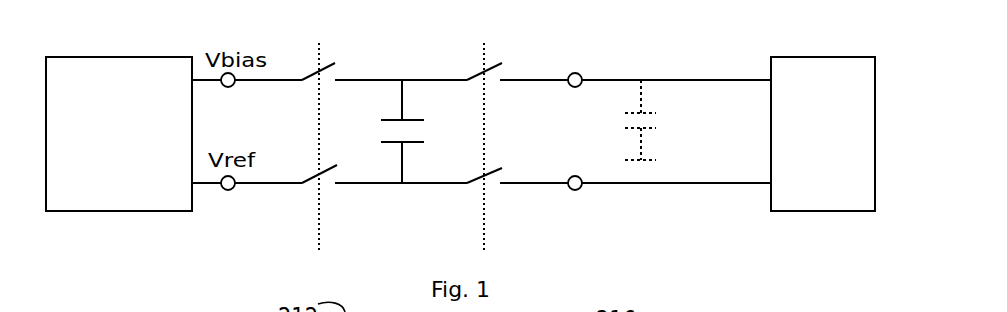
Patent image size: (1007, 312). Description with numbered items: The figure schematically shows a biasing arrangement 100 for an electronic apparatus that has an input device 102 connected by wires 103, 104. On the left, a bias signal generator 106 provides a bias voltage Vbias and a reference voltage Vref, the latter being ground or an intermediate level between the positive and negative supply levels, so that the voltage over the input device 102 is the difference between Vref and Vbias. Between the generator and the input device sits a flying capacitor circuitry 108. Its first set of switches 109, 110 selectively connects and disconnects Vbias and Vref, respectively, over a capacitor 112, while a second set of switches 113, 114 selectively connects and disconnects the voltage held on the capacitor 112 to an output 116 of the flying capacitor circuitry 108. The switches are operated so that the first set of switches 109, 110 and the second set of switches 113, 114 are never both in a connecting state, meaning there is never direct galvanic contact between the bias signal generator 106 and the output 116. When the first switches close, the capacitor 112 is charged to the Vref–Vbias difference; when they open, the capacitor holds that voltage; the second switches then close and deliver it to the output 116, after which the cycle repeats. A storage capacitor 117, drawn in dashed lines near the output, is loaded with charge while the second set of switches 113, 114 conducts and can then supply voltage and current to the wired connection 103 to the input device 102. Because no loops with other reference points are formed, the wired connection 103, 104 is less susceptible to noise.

The biasing arrangement 100 is at (553, 201).
The input device 102 is at (802, 190).
The wire 103 is at (627, 80).
The wire 104 is at (697, 185).
The bias signal generator 106 is at (120, 191).
The flying capacitor circuitry 108 is at (397, 201).
The first set switch 109 is at (324, 68).
The first set switch 110 is at (318, 185).
The capacitor 112 is at (400, 130).
The second set switch 113 is at (488, 70).
The second set switch 114 is at (486, 180).
The output 116 is at (578, 63).
The storage capacitor 117 is at (643, 118).